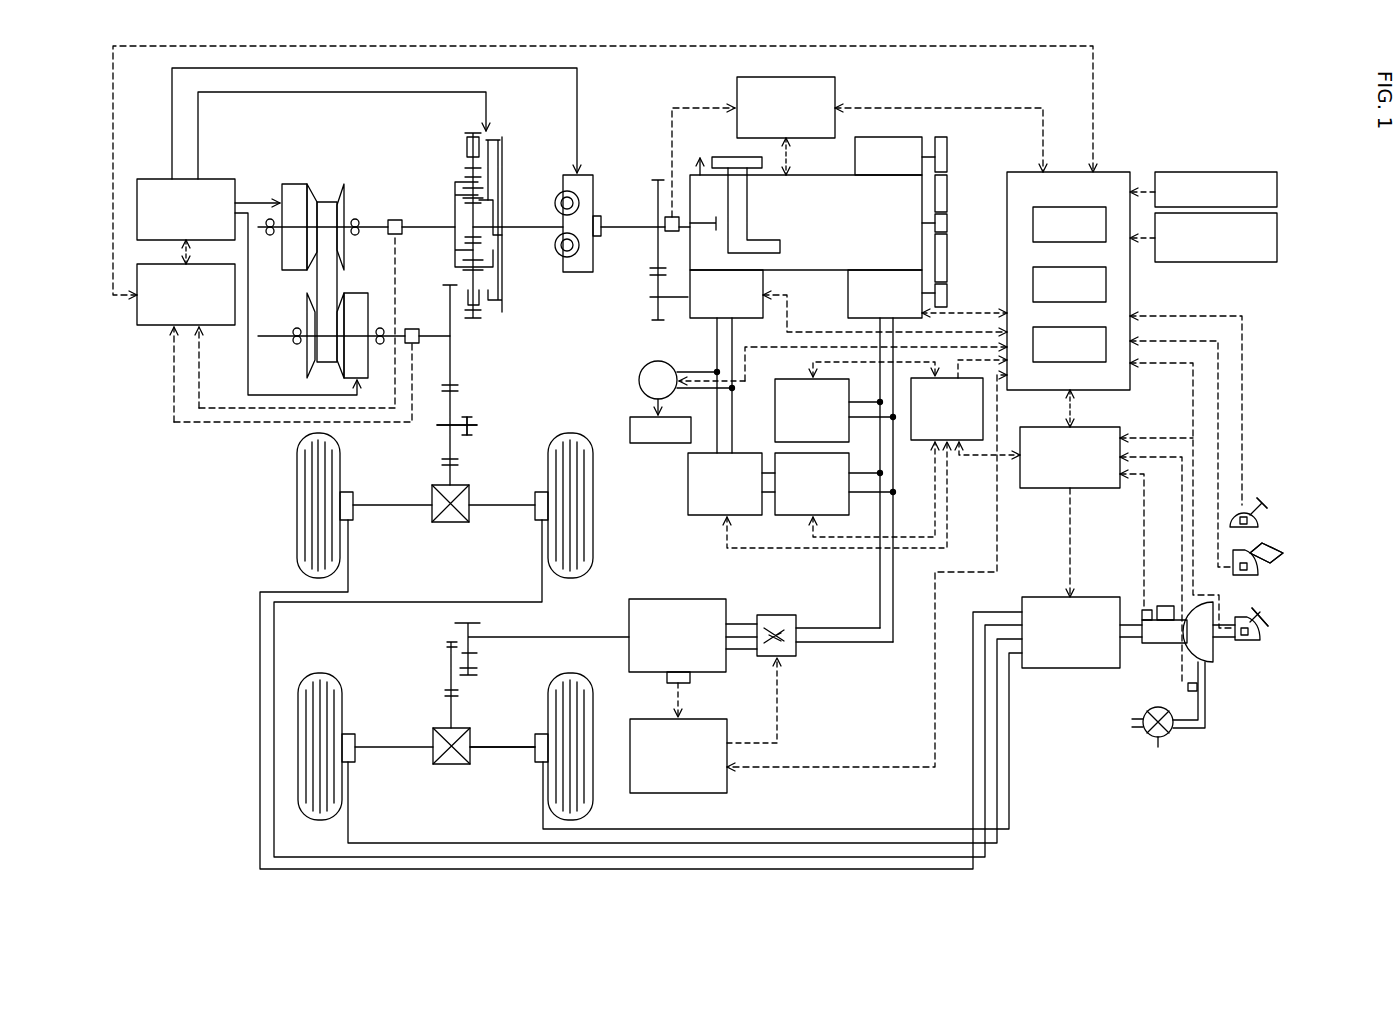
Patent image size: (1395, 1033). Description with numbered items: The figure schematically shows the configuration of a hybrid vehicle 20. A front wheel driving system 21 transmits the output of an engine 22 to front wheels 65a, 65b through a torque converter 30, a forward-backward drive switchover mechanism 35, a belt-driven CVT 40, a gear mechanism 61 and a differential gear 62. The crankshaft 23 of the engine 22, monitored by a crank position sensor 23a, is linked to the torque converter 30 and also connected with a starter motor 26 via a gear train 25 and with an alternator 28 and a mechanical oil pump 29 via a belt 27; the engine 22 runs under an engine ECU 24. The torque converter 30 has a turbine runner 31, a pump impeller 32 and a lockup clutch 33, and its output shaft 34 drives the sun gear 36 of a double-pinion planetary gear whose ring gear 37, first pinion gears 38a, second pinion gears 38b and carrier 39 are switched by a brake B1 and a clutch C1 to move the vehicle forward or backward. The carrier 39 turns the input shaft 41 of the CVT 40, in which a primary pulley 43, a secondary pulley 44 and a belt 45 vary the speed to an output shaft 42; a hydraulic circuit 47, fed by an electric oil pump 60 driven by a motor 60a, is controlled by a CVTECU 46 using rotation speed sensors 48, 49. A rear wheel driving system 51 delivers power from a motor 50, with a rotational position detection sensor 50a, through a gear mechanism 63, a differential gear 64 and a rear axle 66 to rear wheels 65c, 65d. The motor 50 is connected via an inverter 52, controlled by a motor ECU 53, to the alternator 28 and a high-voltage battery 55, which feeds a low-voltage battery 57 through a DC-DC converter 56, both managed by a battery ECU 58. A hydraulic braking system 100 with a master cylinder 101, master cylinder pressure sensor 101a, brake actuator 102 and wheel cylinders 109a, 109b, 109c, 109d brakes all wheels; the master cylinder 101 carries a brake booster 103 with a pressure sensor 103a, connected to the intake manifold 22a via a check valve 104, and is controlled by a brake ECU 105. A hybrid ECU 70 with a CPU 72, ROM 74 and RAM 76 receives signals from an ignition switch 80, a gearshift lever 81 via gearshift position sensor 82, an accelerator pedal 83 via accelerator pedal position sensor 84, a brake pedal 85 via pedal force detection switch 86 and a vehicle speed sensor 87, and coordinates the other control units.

The hybrid vehicle 20 is at (1168, 130).
The front wheel driving system 21 is at (652, 120).
The engine 22 is at (810, 191).
The intake manifold 22a is at (748, 212).
The crankshaft 23 is at (653, 227).
The crank position sensor 23a is at (668, 215).
The engine electronic control unit 24 is at (835, 95).
The gear train 25 is at (645, 262).
The starter motor 26 is at (690, 310).
The belt 27 is at (948, 258).
The alternator 28 is at (848, 303).
The mechanical oil pump 29 is at (885, 140).
The torque converter 30 is at (578, 216).
The turbine runner 31 is at (556, 255).
The pump impeller 32 is at (578, 260).
The lockup clutch 33 is at (596, 250).
The output shaft of the torque converter 34 is at (512, 227).
The forward-backward drive switchover mechanism 35 is at (470, 217).
The sun gear 36 is at (483, 235).
The ring gear 37 is at (466, 162).
The first pinion gears 38a is at (456, 190).
The second pinion gears 38b is at (495, 180).
The carrier 39 is at (456, 250).
The brake B1 is at (453, 136).
The clutch C1 is at (500, 150).
The belt-driven continuously variable transmission 40 is at (314, 259).
The input shaft 41 is at (432, 227).
The output shaft 42 is at (432, 336).
The primary pulley 43 is at (292, 184).
The secondary pulley 44 is at (345, 293).
The belt 45 is at (317, 292).
The CVT electronic control unit 46 is at (216, 325).
The hydraulic circuit 47 is at (220, 179).
The rotation speed sensor 48 is at (395, 218).
The rotation speed sensor 49 is at (413, 328).
The motor 50 is at (655, 599).
The rotational position detection sensor 50a is at (690, 680).
The rear wheel driving system 51 is at (822, 706).
The inverter 52 is at (765, 615).
The motor electronic control unit 53 is at (645, 719).
The high-voltage battery 55 is at (772, 392).
The DC-DC converter 56 is at (775, 512).
The low-voltage battery 57 is at (688, 485).
The battery electronic control unit 58 is at (915, 422).
The electric oil pump 60 is at (630, 428).
The motor 60a is at (639, 380).
The gear mechanism 61 is at (465, 400).
The differential gear 62 is at (458, 522).
The gear mechanism 63 is at (445, 668).
The differential gear 64 is at (440, 764).
The front wheel 65a is at (548, 472).
The front wheel 65b is at (340, 472).
The rear wheel 65c is at (548, 692).
The rear wheel 65d is at (342, 695).
The rear axle 66 is at (490, 747).
The hybrid electronic control unit 70 is at (1068, 252).
The CPU 72 is at (1070, 207).
The ROM 74 is at (1070, 267).
The RAM 76 is at (1082, 327).
The ignition switch 80 is at (1277, 187).
The gearshift lever 81 is at (1262, 503).
The gearshift position sensor 82 is at (1265, 505).
The accelerator pedal 83 is at (1266, 553).
The accelerator pedal position sensor 84 is at (1265, 562).
The brake pedal 85 is at (1260, 617).
The pedal force detection switch 86 is at (1265, 622).
The vehicle speed sensor 87 is at (1277, 237).
The electronically controlled hydraulic braking system 100 is at (1048, 770).
The master cylinder 101 is at (1163, 643).
The master cylinder pressure sensor 101a is at (1142, 612).
The brake actuator 102 is at (1055, 597).
The brake booster 103 is at (1225, 652).
The pressure sensor 103a is at (1186, 690).
The check valve 104 is at (726, 142).
The brake electronic control unit 105 is at (1110, 427).
The wheel cylinder 109a is at (535, 518).
The wheel cylinder 109b is at (350, 520).
The wheel cylinder 109c is at (540, 734).
The wheel cylinder 109d is at (348, 734).